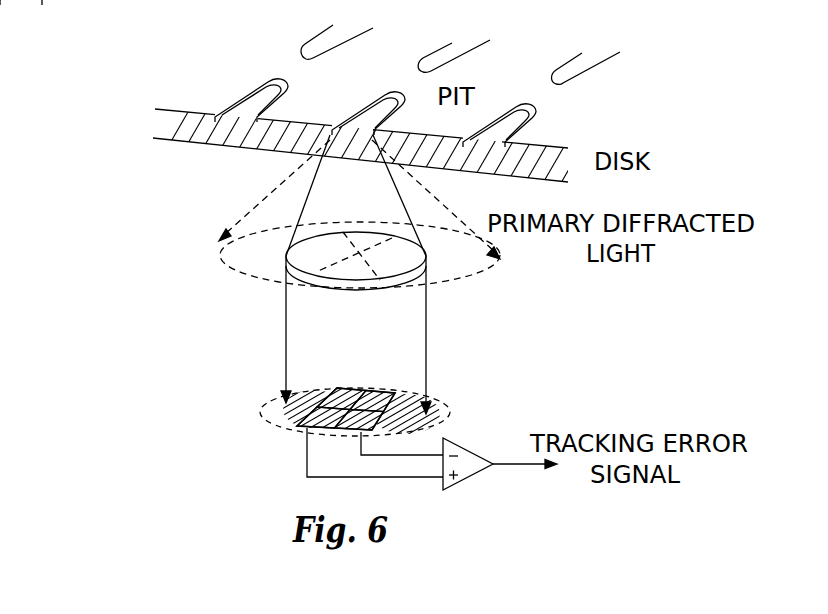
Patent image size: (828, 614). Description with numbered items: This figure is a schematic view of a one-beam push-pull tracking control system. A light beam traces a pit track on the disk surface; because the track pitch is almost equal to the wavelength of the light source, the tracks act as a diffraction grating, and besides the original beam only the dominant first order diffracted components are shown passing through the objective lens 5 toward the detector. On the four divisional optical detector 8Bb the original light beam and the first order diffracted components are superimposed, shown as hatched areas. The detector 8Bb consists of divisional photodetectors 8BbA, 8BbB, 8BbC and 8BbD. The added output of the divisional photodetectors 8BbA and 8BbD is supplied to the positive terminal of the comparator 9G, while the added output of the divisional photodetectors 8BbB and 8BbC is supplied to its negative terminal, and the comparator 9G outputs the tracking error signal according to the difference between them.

The objective lens 5 is at (392, 286).
The 4 divisional optical detector 8Bb is at (204, 365).
The divisional photodetector 8BbA is at (337, 390).
The divisional photodetector 8BbB is at (380, 393).
The divisional photodetector 8BbC is at (378, 426).
The divisional photodetector 8BbD is at (307, 430).
The comparator 9G is at (462, 479).